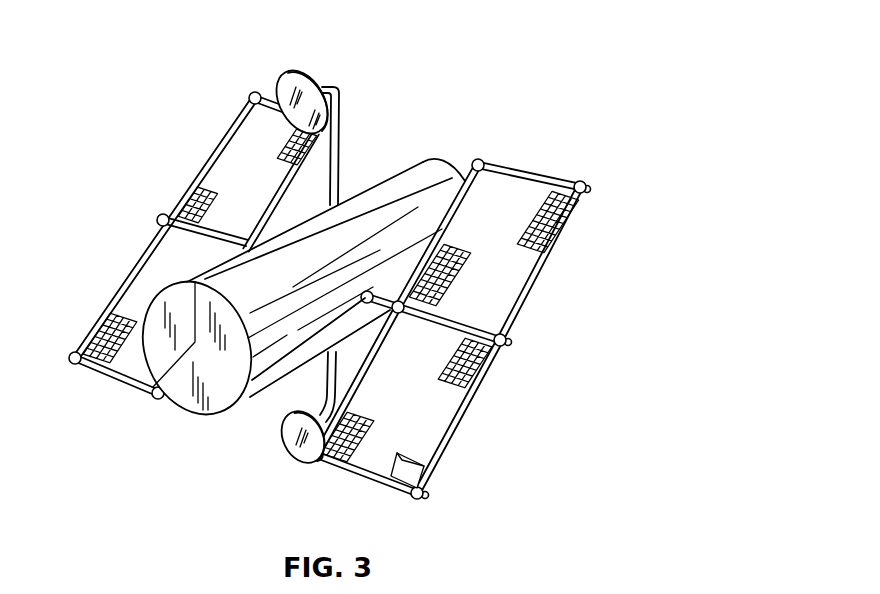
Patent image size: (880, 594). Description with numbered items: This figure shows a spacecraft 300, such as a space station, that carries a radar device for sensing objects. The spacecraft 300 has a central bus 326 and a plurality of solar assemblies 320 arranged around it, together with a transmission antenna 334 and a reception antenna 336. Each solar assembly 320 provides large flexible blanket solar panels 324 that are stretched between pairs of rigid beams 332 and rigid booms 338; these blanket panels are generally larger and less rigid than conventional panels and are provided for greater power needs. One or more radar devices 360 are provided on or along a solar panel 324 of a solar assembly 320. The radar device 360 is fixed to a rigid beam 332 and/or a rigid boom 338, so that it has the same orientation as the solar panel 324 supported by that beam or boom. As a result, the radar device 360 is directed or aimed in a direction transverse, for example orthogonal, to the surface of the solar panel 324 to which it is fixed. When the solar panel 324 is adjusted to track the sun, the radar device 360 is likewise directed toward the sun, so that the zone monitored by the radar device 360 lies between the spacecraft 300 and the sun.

The spacecraft 300 is at (333, 265).
The solar assemblies 320 is at (118, 290).
The flexible blanket solar panels 324 is at (435, 388).
The bus 326 is at (443, 160).
The rigid beams 332 is at (463, 323).
The transmission antenna 334 is at (307, 72).
The reception antenna 336 is at (286, 436).
The rigid booms 338 is at (287, 183).
The radar device 360 is at (413, 470).